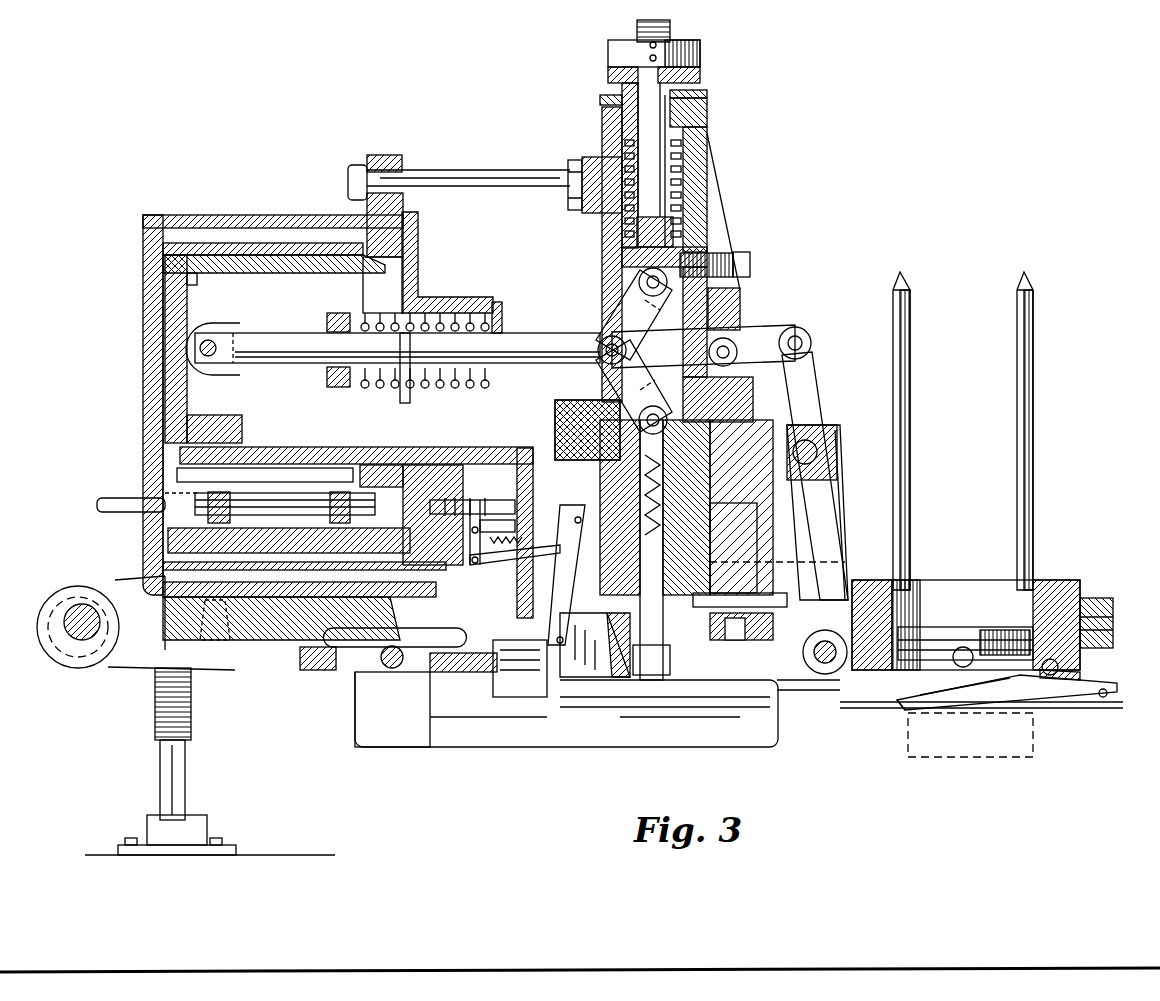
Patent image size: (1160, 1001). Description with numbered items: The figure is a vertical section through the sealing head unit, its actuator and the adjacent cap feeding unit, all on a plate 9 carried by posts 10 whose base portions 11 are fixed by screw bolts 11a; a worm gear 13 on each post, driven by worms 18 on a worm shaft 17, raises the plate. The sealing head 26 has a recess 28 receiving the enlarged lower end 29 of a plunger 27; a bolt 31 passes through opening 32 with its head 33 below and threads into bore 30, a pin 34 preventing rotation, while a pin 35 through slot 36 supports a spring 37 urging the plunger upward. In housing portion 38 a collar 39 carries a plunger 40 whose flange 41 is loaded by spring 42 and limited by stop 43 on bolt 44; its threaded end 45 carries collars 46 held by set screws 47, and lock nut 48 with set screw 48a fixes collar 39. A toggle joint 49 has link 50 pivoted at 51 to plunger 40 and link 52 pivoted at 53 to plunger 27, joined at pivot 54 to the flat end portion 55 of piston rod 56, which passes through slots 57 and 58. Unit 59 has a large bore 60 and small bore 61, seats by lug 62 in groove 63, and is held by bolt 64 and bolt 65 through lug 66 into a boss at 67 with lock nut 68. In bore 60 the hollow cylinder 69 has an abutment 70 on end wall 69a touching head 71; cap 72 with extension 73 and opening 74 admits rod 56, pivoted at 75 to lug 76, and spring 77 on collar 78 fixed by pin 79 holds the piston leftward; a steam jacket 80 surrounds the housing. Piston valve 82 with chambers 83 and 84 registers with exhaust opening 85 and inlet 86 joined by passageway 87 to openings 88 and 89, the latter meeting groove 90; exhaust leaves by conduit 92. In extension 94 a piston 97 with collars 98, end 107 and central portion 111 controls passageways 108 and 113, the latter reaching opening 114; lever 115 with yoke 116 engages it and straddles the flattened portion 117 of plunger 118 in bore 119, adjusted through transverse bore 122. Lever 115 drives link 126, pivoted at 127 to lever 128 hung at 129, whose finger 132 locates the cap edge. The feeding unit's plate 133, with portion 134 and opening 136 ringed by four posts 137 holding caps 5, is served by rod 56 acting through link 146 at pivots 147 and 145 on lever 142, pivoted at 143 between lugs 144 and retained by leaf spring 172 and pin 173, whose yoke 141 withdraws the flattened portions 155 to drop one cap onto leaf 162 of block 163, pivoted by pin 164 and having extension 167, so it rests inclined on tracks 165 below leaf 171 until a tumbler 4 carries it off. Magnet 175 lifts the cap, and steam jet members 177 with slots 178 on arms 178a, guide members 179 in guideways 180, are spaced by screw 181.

The tumbler 4 is at (908, 745).
The cap 5 is at (903, 708).
The plate 9 is at (230, 662).
The posts 10 is at (185, 715).
The base portion 11 is at (185, 825).
The screw bolts 11a is at (225, 843).
The worm gear 13 is at (110, 628).
The worm shaft 17 is at (65, 615).
The worms 18 is at (70, 595).
The sealing head 26 is at (593, 677).
The plunger 27 is at (735, 535).
The recess 28 is at (615, 630).
The enlarged lower end 29 is at (695, 612).
The bore 30 is at (712, 553).
The bolt 31 is at (745, 575).
The opening 32 is at (675, 680).
The head 33 is at (655, 680).
The pin 34 is at (740, 627).
The pin 35 is at (765, 520).
The slot 36 is at (770, 500).
The compression spring 37 is at (605, 470).
The housing portion 38 is at (710, 197).
The collar 39 is at (690, 90).
The plunger 40 is at (713, 110).
The peripheral flange 41 is at (726, 205).
The compression spring 42 is at (700, 165).
The stop portion 43 is at (678, 278).
The bolt 44 is at (750, 265).
The threaded upper end 45 is at (618, 88).
The threaded collars 46 is at (620, 60).
The set screws 47 is at (645, 45).
The lock nut 48 is at (712, 97).
The set screw 48a is at (602, 100).
The toggle joint 49 is at (605, 320).
The link 50 is at (633, 300).
The pivot 51 is at (640, 275).
The link 52 is at (625, 385).
The pivot 53 is at (690, 400).
The pivot 54 is at (600, 350).
The flat end portion 55 is at (605, 345).
The piston rod 56 is at (528, 345).
The slot 57 is at (600, 380).
The slot 58 is at (715, 325).
The fluid-operated cylinder and piston unit 59 is at (143, 385).
The large cylinder bore 60 is at (382, 268).
The small cylinder bore 61 is at (165, 490).
The lug 62 is at (390, 655).
The groove 63 is at (398, 655).
The bolt 64 is at (225, 605).
The large bolt 65 is at (455, 178).
The upstanding lug 66 is at (385, 165).
The boss 67 is at (598, 170).
The lock nut 68 is at (573, 165).
The hollow cylinder 69 is at (240, 250).
The end wall 69a is at (185, 285).
The abutment 70 is at (168, 345).
The head 71 is at (158, 310).
The cap 72 is at (420, 265).
The cylindrical extension 73 is at (450, 305).
The opening 74 is at (495, 310).
The pivotal connection 75 is at (215, 348).
The bifurcated lug 76 is at (195, 345).
The compression spring 77 is at (385, 432).
The collar 78 is at (328, 318).
The transverse pin 79 is at (328, 377).
The steam jacket 80 is at (300, 655).
The piston valve 82 is at (180, 500).
The annular chamber 83 is at (340, 500).
The annular chamber 84 is at (195, 520).
The exhaust opening 85 is at (213, 440).
The inlet opening 86 is at (295, 445).
The longitudinal passageway 87 is at (245, 445).
The opening 88 is at (180, 455).
The opening 89 is at (330, 445).
The longitudinal groove 90 is at (310, 440).
The exhaust conduit 92 is at (97, 503).
The extension 94 is at (493, 455).
The piston 97 is at (465, 455).
The collars 98 is at (537, 468).
The end 107 is at (430, 455).
The passageway 108 is at (262, 610).
The central portion 111 is at (447, 455).
The passageway 113 is at (505, 455).
The opening 114 is at (385, 448).
The pivoted lever 115 is at (520, 523).
The yoke portion 116 is at (520, 493).
The flattened portion 117 is at (485, 555).
The small plunger 118 is at (530, 543).
The bore 119 is at (465, 672).
The transverse bore 122 is at (440, 665).
The link 126 is at (527, 627).
The pivot 127 is at (560, 575).
The lever 128 is at (555, 633).
The pivot 129 is at (580, 520).
The finger portion 132 is at (548, 688).
The plate 133 is at (1060, 582).
The portion 134 is at (1113, 625).
The opening 136 is at (925, 590).
The posts 137 is at (1031, 437).
The yoke 141 is at (812, 625).
The lever 142 is at (822, 540).
The pivot 143 is at (843, 458).
The lugs 144 is at (820, 430).
The pivot 145 is at (808, 342).
The link 146 is at (775, 345).
The pivot 147 is at (715, 352).
The flattened portion 155 is at (968, 640).
The leaf member 162 is at (1033, 683).
The block portion 163 is at (1100, 680).
The pivot pin 164 is at (1065, 668).
The tracks 165 is at (810, 700).
The rearward extension 167 is at (1115, 705).
The leaf member 171 is at (842, 683).
The leaf spring 172 is at (845, 483).
The pin 173 is at (840, 447).
The magnet 175 is at (765, 700).
The steam jet members 177 is at (720, 710).
The steam slots 178 is at (633, 707).
The arms 178a is at (470, 745).
The guide members 179 is at (375, 685).
The guideways 180 is at (345, 660).
The screw member 181 is at (395, 670).